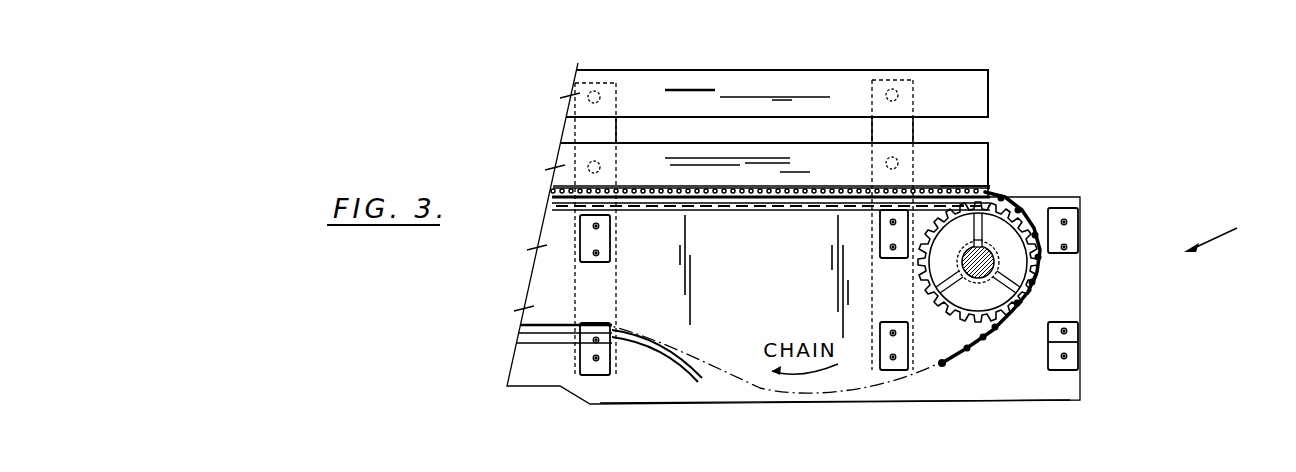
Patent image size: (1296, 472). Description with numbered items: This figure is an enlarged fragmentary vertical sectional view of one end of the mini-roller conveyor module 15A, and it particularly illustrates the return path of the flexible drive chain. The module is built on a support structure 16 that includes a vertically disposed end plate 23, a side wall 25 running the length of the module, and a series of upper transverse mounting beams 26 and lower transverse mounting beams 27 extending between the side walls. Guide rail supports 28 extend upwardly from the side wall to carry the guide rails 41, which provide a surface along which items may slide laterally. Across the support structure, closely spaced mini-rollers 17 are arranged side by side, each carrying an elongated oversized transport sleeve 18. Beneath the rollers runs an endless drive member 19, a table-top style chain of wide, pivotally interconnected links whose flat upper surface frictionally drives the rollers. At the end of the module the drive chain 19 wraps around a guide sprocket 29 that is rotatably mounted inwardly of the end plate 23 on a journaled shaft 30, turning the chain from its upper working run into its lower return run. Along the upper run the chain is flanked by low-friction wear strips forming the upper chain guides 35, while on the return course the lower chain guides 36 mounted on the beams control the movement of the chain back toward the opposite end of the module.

The mini-roller conveyor module 15A is at (1232, 231).
The support structure 16 is at (1077, 246).
The mini-rollers 17 is at (945, 192).
The transport sleeve 18 is at (645, 192).
The endless drive members 19 is at (745, 209).
The plate 23 is at (1082, 295).
The side wall 25 is at (1010, 375).
The upper transverse mounting beams 26 is at (582, 218).
The lower transverse mounting beams 27 is at (601, 374).
The guide rail supports 28 is at (620, 119).
The guide sprocket 29 is at (1034, 279).
The journaled shaft 30 is at (972, 282).
The upper chain guides 35 is at (810, 209).
The lower chain guides 36 is at (530, 340).
The guide rails 41 is at (852, 97).